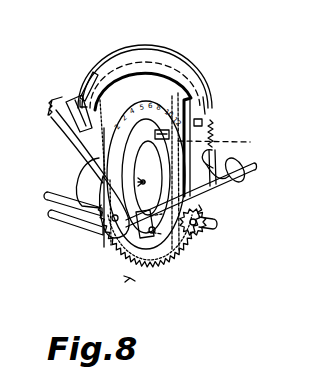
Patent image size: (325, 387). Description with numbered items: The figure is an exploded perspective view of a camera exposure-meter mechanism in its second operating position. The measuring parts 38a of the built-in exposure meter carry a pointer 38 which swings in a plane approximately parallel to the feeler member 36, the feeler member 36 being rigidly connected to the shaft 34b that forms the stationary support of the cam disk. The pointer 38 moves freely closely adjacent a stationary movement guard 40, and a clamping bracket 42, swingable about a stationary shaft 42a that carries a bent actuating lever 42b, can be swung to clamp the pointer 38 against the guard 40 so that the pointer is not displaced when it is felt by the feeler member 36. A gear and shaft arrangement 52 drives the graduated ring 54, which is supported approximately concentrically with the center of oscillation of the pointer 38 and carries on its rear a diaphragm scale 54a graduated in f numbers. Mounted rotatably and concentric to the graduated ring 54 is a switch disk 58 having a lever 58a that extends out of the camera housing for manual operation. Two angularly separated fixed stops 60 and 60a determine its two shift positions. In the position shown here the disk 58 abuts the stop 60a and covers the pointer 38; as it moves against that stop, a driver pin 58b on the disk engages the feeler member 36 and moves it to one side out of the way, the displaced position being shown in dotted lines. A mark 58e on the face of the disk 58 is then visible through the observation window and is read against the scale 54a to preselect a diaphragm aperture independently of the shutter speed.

The shaft 34b is at (70, 217).
The feeler member 36 is at (205, 85).
The pointer 38 is at (142, 43).
The measuring parts 38a is at (85, 172).
The movement guard 40 is at (86, 78).
The clamping bracket 42 is at (200, 100).
The stationary shaft 42a is at (245, 172).
The actuating lever 42b is at (232, 184).
The gear and shaft arrangement 52 is at (206, 234).
The graduated ring 54 is at (115, 262).
The diaphragm scale 54a is at (131, 121).
The switch disk 58 is at (176, 57).
The lever 58a is at (70, 128).
The driver pin 58b is at (231, 151).
The mark 58e is at (158, 102).
The stop 60 is at (137, 281).
The stop 60a is at (209, 120).